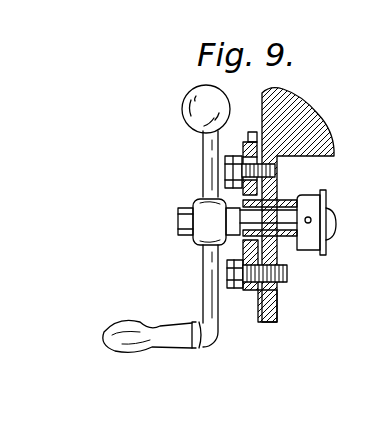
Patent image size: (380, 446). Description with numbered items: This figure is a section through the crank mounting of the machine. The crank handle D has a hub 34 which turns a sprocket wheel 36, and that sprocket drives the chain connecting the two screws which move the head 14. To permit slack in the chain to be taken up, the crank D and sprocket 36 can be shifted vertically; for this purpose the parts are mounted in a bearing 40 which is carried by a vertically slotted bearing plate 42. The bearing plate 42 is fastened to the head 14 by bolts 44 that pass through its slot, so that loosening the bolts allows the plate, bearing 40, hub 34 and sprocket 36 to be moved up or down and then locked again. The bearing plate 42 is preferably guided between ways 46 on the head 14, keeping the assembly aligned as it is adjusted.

The head 14 is at (308, 118).
The hub 34 is at (196, 243).
The sprocket wheel 36 is at (320, 192).
The bearing 40 is at (289, 199).
The bearing plate 42 is at (254, 294).
The bolts 44 is at (234, 155).
The ways 46 is at (252, 132).
The crank handle D is at (151, 351).